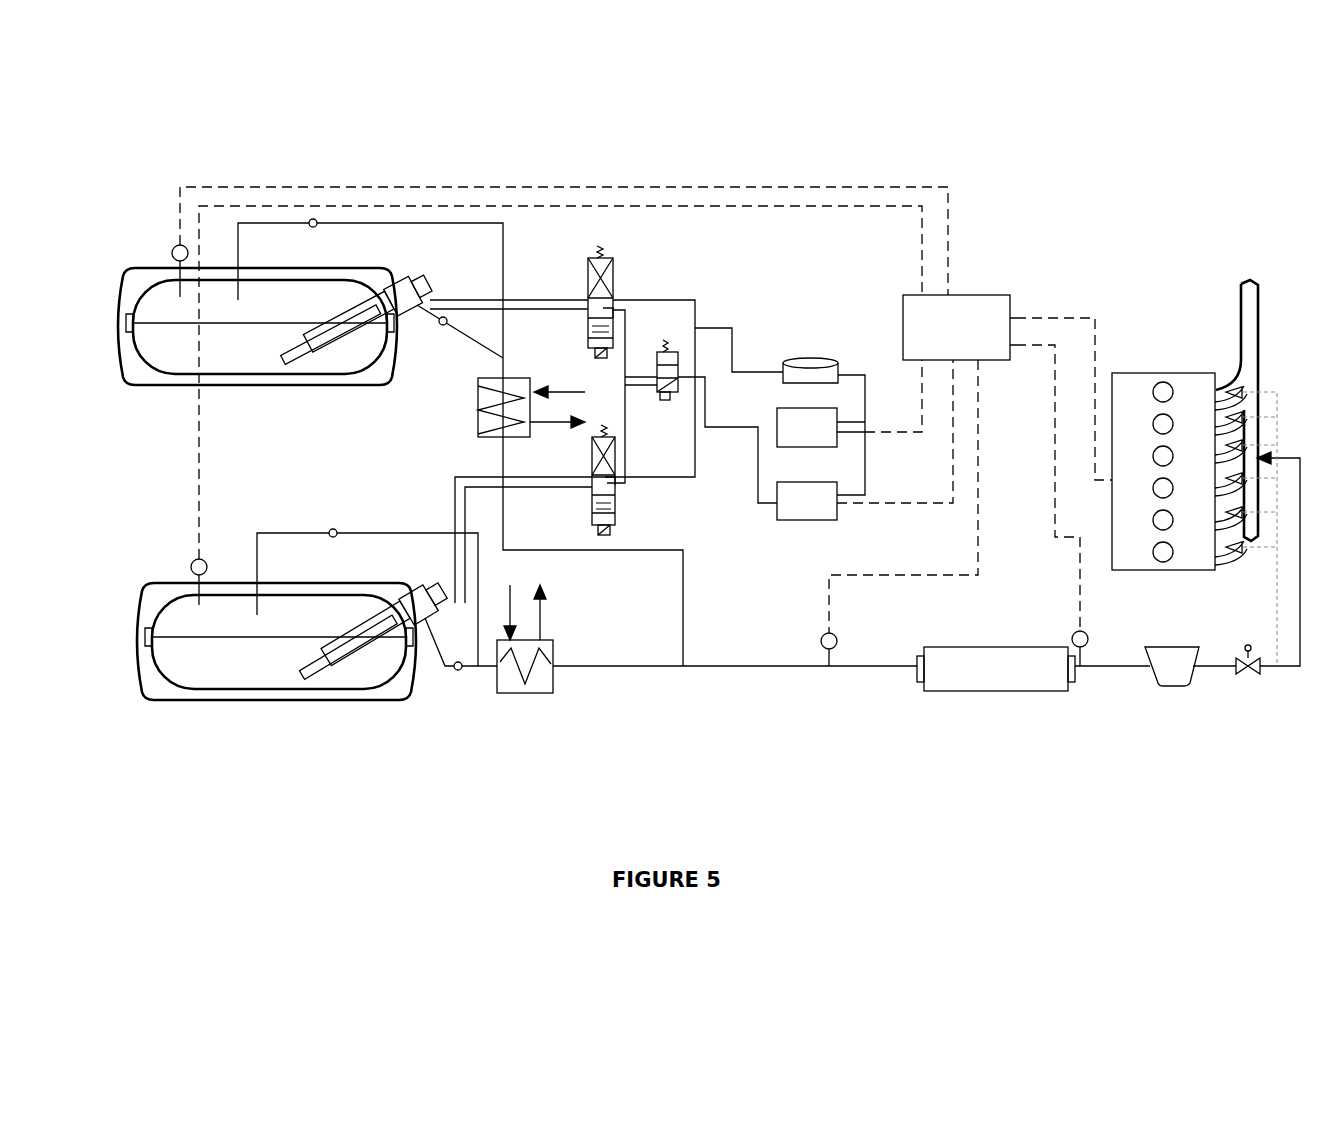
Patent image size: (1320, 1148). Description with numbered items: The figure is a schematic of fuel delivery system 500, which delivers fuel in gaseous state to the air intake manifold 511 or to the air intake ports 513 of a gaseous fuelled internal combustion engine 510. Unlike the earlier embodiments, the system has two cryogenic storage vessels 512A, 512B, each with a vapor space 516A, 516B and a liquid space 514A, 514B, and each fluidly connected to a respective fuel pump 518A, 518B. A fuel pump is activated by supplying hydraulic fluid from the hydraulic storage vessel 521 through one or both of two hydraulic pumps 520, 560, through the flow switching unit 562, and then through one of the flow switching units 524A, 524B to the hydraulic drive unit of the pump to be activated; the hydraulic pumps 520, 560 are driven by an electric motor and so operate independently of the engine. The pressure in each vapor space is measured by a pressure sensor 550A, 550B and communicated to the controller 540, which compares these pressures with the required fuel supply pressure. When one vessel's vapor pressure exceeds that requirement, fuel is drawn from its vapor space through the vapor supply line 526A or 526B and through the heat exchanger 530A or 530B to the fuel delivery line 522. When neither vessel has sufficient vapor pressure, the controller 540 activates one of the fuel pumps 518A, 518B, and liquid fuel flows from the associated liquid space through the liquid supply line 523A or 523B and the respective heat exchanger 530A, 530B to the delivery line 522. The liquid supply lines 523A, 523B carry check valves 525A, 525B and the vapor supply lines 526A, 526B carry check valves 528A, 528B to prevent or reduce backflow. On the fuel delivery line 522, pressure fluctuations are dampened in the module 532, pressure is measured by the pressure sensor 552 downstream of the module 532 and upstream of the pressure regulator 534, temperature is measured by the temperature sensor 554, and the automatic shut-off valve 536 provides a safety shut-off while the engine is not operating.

The fuel delivery system 500 is at (290, 142).
The gaseous fuelled internal combustion engine 510 is at (1160, 375).
The air intake manifold 511 is at (1254, 325).
The cryogenic storage vessel 512A is at (131, 277).
The cryogenic storage vessel 512B is at (145, 603).
The air intake ports 513 is at (1228, 554).
The liquid space 514A is at (225, 358).
The liquid space 514B is at (224, 670).
The vapor space 516A is at (285, 303).
The vapor space 516B is at (287, 603).
The fuel pump 518A is at (303, 355).
The fuel pump 518B is at (323, 665).
The hydraulic pump 520 is at (818, 416).
The hydraulic storage vessel 521 is at (793, 358).
The fuel delivery line 522 is at (863, 668).
The liquid supply line 523A is at (421, 310).
The liquid supply line 523B is at (424, 622).
The flow switching unit 524A is at (612, 280).
The flow switching unit 524B is at (616, 514).
The check valve 525A is at (443, 326).
The check valve 525B is at (458, 670).
The vapor supply line 526A is at (267, 222).
The vapor supply line 526B is at (278, 533).
The check valve 528A is at (318, 218).
The check valve 528B is at (336, 529).
The heat exchanger 530A is at (478, 414).
The heat exchanger 530B is at (555, 689).
The module 532 is at (1013, 680).
The pressure regulator 534 is at (1171, 674).
The automatic shut-off valve 536 is at (1241, 669).
The controller 540 is at (970, 305).
The pressure sensor 550A is at (176, 245).
The pressure sensor 550B is at (191, 566).
The pressure sensor 552 is at (1088, 636).
The temperature sensor 554 is at (837, 634).
The hydraulic pump 560 is at (818, 500).
The flow switching unit 562 is at (667, 348).